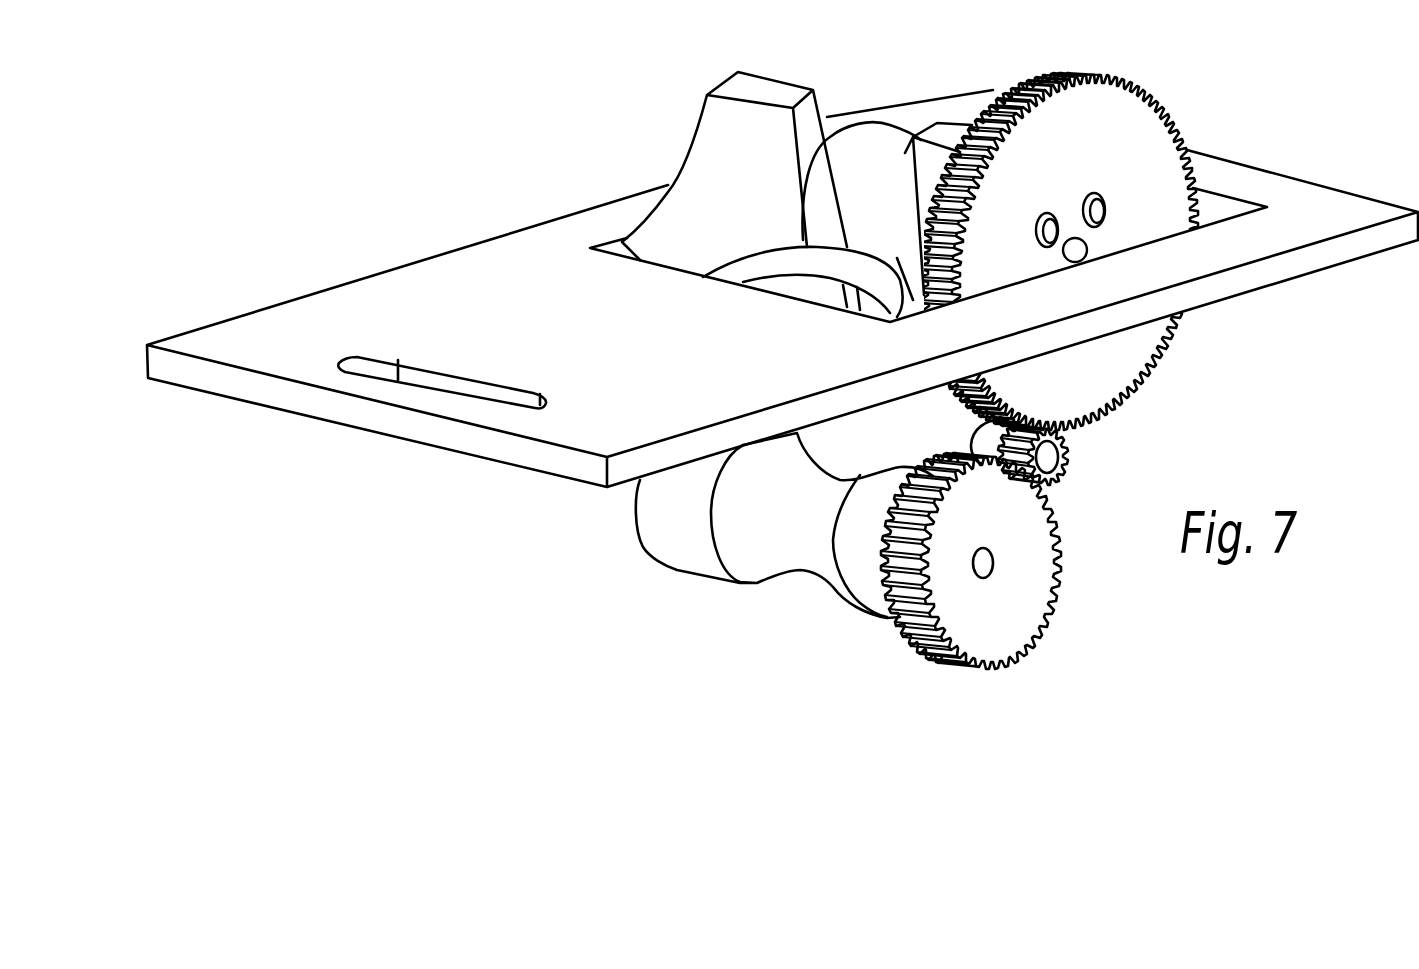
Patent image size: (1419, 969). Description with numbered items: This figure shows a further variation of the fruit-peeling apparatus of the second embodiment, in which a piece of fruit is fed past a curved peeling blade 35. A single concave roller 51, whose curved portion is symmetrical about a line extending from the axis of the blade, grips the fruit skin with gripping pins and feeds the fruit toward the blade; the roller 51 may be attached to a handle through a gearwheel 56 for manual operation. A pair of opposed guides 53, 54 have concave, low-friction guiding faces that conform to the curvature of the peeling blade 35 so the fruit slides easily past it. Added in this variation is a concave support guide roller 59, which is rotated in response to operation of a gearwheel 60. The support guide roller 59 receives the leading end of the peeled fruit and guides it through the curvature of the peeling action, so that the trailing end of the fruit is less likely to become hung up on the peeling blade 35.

The curved peeling blade 35 is at (737, 268).
The concave roller 51 is at (870, 153).
The guide 53 is at (717, 153).
The guide 54 is at (950, 148).
The gearwheel 56 is at (1108, 164).
The support guide roller 59 is at (662, 538).
The gearwheel 60 is at (1027, 563).